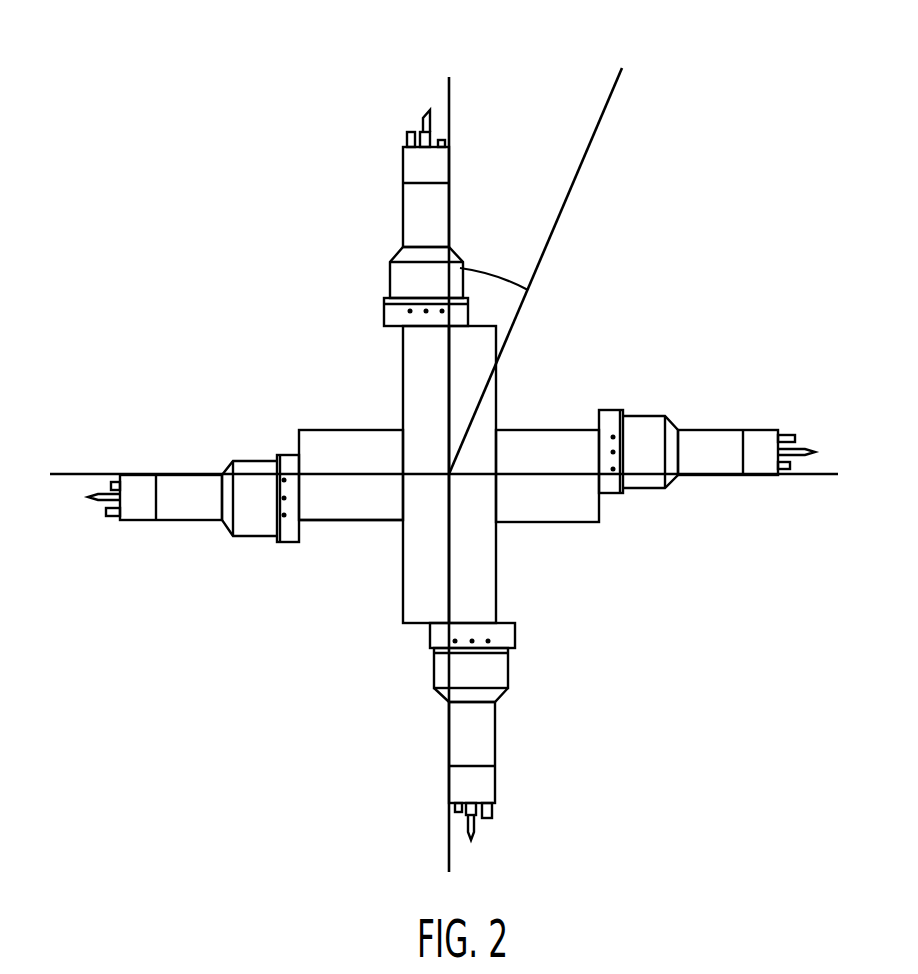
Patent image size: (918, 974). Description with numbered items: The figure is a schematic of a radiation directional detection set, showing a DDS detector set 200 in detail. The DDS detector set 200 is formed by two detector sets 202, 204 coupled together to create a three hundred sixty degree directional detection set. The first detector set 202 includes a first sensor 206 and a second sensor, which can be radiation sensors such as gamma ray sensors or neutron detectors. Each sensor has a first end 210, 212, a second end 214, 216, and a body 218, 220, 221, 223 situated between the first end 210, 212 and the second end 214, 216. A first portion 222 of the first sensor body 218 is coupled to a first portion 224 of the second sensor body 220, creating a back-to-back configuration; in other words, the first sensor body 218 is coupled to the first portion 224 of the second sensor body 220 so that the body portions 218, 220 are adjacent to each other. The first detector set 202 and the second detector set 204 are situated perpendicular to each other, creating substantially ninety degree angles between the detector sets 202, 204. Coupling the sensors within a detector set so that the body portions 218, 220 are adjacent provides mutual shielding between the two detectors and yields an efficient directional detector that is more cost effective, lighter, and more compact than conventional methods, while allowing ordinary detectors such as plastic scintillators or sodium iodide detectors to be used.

The DDS detector set 200 is at (457, 47).
The first detector set 202 is at (372, 257).
The second detector set 204 is at (297, 566).
The first sensor 206 is at (403, 350).
The first end 210 is at (433, 166).
The first end 212 is at (138, 513).
The second end 214 is at (484, 789).
The second end 216 is at (762, 452).
The first sensor body 218 is at (406, 426).
The second sensor body 220 is at (483, 583).
The body 221 is at (352, 507).
The first portion of the first sensor body 222 is at (460, 375).
The body 223 is at (543, 448).
The first portion of the second sensor body 224 is at (438, 595).